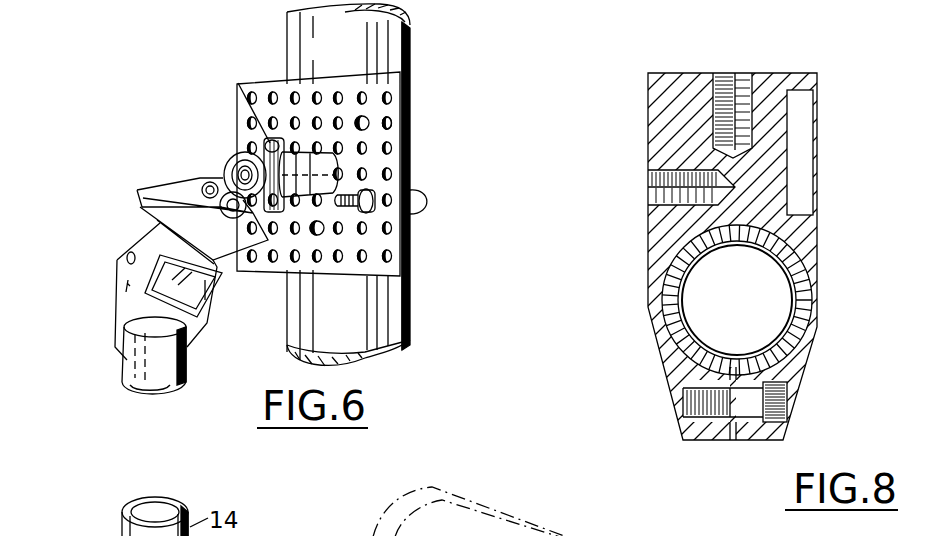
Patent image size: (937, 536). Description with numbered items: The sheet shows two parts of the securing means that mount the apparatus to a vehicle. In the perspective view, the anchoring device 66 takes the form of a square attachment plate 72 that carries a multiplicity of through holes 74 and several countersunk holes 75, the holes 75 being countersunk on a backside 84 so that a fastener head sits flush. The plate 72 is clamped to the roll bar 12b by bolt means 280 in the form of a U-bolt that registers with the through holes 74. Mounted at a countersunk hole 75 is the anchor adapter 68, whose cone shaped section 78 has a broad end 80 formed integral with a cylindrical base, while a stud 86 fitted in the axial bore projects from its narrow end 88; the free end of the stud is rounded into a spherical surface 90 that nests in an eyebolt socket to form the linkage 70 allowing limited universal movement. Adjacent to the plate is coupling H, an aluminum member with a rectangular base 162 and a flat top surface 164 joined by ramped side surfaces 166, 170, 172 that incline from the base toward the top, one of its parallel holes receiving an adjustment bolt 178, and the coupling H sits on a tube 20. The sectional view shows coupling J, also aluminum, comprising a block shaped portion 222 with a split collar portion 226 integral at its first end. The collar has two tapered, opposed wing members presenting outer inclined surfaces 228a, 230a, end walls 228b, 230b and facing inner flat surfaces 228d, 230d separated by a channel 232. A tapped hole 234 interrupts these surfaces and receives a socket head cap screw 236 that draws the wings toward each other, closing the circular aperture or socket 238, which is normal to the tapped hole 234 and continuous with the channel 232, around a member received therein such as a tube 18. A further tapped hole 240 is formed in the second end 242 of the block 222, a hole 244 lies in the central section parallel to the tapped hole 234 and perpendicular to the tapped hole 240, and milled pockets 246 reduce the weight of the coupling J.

In FIG. 6, the roll bar 12b is at (408, 33).
In FIG. 6, the anchoring device 66 is at (271, 50).
In FIG. 6, the countersunk holes 75 is at (368, 118).
In FIG. 6, the through holes 74 is at (388, 144).
In FIG. 6, the backside 84 is at (412, 217).
In FIG. 6, the broad end 80 is at (330, 178).
In FIG. 6, the bolt means 280 is at (280, 143).
In FIG. 6, the linkage 70 is at (222, 153).
In FIG. 6, the spherical surface 90 is at (233, 186).
In FIG. 6, the stud 86 is at (240, 83).
In FIG. 6, the square attachment plate 72 is at (252, 72).
In FIG. 6, the ramped side surface 170 is at (166, 196).
In FIG. 6, the flat top surface 164 is at (207, 182).
In FIG. 6, the ramped side surface 166 is at (168, 202).
In FIG. 6, the rectangular base 162 is at (130, 196).
In FIG. 6, the adjustment bolt 178 is at (160, 223).
In FIG. 6, the ramped side surface 172 is at (241, 250).
In FIG. 6, the tube 20 is at (185, 368).
In FIG. 6, the coupling H is at (134, 164).
In FIG. 6, the anchor adapter 68 is at (307, 218).
In FIG. 6, the cone shaped section 78 is at (292, 202).
In FIG. 6, the narrow end 88 is at (280, 243).
In FIG. 8, the block shaped portion 222 is at (777, 197).
In FIG. 8, the milled pockets 246 is at (807, 163).
In FIG. 8, the tapped hole 240 is at (758, 85).
In FIG. 8, the second end 242 is at (683, 60).
In FIG. 8, the hole 244 is at (657, 208).
In FIG. 8, the tube bore 18 is at (792, 287).
In FIG. 8, the circular aperture or socket 238 is at (798, 307).
In FIG. 8, the split collar portion 226 is at (814, 328).
In FIG. 8, the tapped hole 234 is at (740, 397).
In FIG. 8, the socket head cap screw 236 is at (793, 405).
In FIG. 8, the channel 232 is at (733, 456).
In FIG. 8, the outer inclined surface 228a is at (800, 373).
In FIG. 8, the end wall 228b is at (783, 447).
In FIG. 8, the inner flat surface 228d is at (737, 427).
In FIG. 8, the outer inclined surface 230a is at (670, 383).
In FIG. 8, the end wall 230b is at (703, 441).
In FIG. 8, the inner flat surface 230d is at (722, 440).
In FIG. 8, the coupling J is at (842, 117).